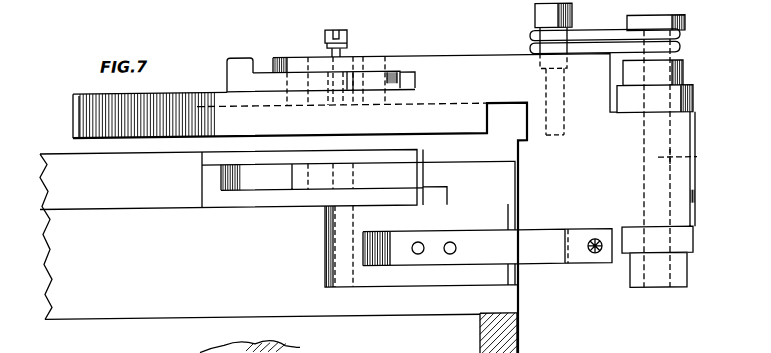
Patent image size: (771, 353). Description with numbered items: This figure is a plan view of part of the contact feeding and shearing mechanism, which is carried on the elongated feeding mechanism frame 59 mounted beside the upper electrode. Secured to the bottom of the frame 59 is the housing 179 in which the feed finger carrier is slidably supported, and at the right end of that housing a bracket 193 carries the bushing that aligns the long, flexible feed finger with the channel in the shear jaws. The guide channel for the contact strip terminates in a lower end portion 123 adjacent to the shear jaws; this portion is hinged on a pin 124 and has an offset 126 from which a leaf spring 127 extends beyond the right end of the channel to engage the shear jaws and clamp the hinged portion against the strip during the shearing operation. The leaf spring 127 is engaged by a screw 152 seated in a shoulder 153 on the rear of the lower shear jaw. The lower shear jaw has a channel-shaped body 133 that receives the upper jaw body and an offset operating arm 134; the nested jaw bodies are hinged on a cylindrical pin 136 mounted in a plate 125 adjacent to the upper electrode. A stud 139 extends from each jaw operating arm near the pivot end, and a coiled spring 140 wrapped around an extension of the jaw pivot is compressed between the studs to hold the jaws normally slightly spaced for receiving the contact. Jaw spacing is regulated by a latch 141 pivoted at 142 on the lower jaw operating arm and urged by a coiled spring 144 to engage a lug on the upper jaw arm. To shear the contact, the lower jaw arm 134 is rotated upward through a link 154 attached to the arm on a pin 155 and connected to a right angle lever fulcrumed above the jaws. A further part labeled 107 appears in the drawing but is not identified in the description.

The feeding mechanism frame 59 is at (87, 300).
The bracket block 107 is at (230, 83).
The lower end portion of the feed channel 123 is at (443, 172).
The pin 124 is at (325, 257).
The plate 125 is at (678, 105).
The offset 126 is at (418, 279).
The leaf spring 127 is at (533, 254).
The channel-shaped body 133 is at (632, 207).
The offset operating arm 134 is at (83, 103).
The cylindrical pin 136 is at (697, 163).
The stud 139 is at (540, 28).
The coiled spring 140 is at (583, 44).
The latch 141 is at (262, 83).
The pivot 142 is at (298, 65).
The coiled spring 144 is at (347, 46).
The screw 152 is at (597, 259).
The shoulder 153 is at (580, 262).
The link 154 is at (420, 78).
The pin 155 is at (385, 66).
The housing 179 is at (53, 164).
The bracket 193 is at (517, 343).